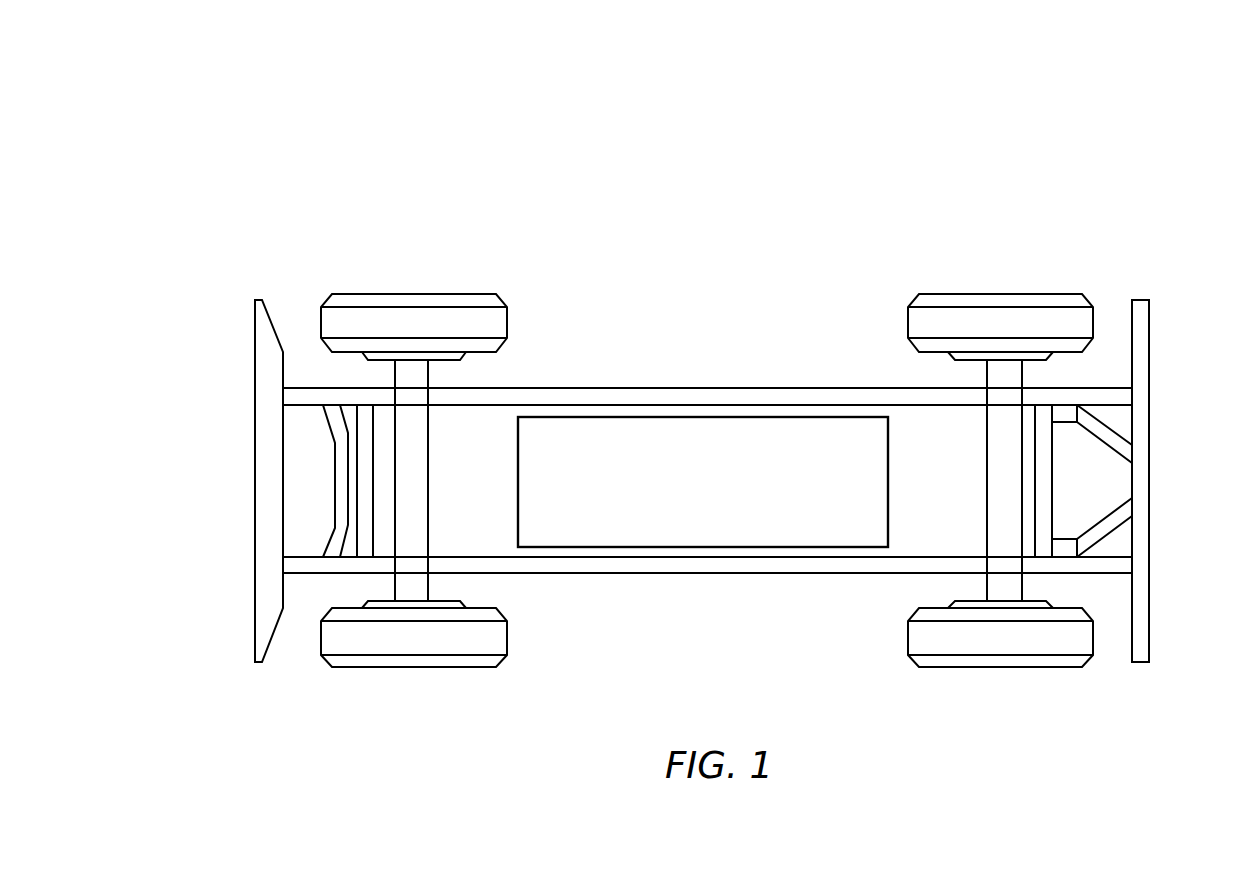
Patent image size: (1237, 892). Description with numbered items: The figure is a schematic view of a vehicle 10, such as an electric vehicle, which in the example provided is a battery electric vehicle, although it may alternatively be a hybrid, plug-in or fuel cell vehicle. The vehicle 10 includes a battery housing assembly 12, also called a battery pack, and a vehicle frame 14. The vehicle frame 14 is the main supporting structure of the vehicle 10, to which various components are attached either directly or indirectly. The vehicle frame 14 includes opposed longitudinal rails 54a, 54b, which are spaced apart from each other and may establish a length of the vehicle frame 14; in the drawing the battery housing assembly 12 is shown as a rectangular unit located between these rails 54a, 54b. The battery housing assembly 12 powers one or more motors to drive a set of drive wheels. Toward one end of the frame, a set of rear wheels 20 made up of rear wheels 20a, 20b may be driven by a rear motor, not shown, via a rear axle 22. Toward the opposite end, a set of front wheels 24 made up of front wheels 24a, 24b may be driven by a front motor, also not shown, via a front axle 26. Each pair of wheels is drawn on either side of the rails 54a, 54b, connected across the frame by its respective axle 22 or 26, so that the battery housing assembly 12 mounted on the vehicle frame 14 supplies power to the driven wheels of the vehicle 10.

The vehicle 10 is at (382, 153).
The battery housing assembly 12 is at (788, 445).
The vehicle frame 14 is at (770, 315).
The set of rear wheels 20 is at (955, 262).
The rear wheel 20a is at (1032, 298).
The rear wheel 20b is at (988, 645).
The rear axle 22 is at (1013, 478).
The set of front wheels 24 is at (397, 263).
The front wheel 24a is at (477, 317).
The front wheel 24b is at (402, 640).
The front axle 26 is at (405, 495).
The longitudinal rail 54a is at (577, 388).
The longitudinal rail 54b is at (720, 573).